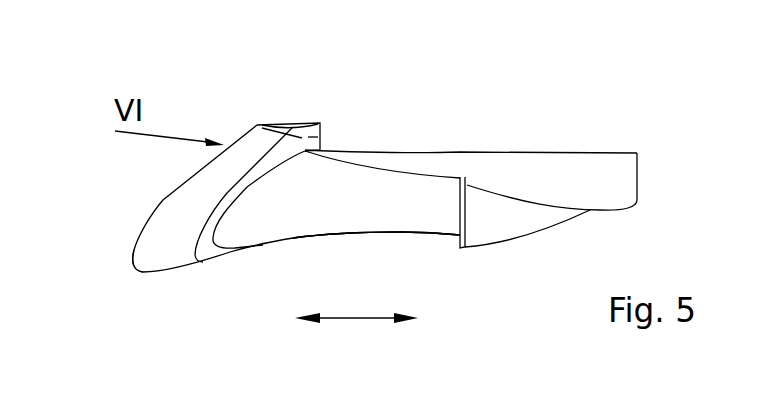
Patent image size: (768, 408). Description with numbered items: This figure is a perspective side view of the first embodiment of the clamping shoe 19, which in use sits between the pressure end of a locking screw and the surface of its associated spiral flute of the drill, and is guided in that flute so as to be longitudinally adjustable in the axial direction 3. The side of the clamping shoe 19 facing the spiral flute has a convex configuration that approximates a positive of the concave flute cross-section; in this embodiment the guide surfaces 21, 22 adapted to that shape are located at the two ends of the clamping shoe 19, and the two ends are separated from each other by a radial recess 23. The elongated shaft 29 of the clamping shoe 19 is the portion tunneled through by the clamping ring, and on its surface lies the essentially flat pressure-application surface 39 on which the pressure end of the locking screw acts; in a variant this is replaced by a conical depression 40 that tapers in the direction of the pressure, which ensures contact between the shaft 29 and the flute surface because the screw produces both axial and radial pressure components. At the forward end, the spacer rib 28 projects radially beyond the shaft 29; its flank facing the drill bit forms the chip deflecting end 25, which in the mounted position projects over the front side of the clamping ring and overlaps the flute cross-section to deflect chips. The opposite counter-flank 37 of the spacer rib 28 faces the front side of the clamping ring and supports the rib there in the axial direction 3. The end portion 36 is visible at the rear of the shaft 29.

The axial direction 3 is at (350, 320).
The clamping shoe 19 is at (303, 258).
The guide surface 21 is at (158, 254).
The guide surface 22 is at (498, 218).
The radial recess 23 is at (388, 252).
The chip deflecting end 25 is at (120, 262).
The spacer rib 28 is at (297, 125).
The shaft 29 is at (465, 156).
The end portion 36 is at (637, 182).
The counter-flank 37 is at (323, 133).
The pressure-application surface 39 is at (471, 133).
The conical depression 40 is at (424, 152).